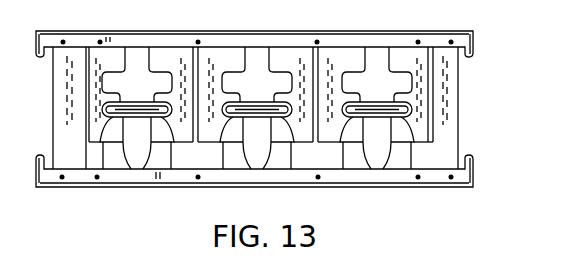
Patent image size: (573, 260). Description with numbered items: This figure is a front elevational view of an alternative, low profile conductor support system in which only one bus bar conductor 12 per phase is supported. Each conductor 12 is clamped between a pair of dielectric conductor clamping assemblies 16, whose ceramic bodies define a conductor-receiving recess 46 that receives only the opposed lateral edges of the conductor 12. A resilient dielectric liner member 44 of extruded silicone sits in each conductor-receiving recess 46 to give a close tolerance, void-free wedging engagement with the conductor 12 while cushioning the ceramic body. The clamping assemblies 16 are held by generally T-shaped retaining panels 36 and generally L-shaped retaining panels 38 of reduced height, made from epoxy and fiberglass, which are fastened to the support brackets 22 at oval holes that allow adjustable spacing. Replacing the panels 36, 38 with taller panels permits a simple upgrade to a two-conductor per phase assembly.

The support bracket 22 is at (72, 31).
The L-shaped retaining panel 38 is at (53, 90).
The conductor-receiving recess 46 is at (130, 72).
The bus bar conductor 12 is at (123, 124).
The conductor clamping assembly 16 is at (139, 170).
The resilient dielectric liner member 44 is at (101, 146).
The T-shaped retaining panel 36 is at (179, 173).